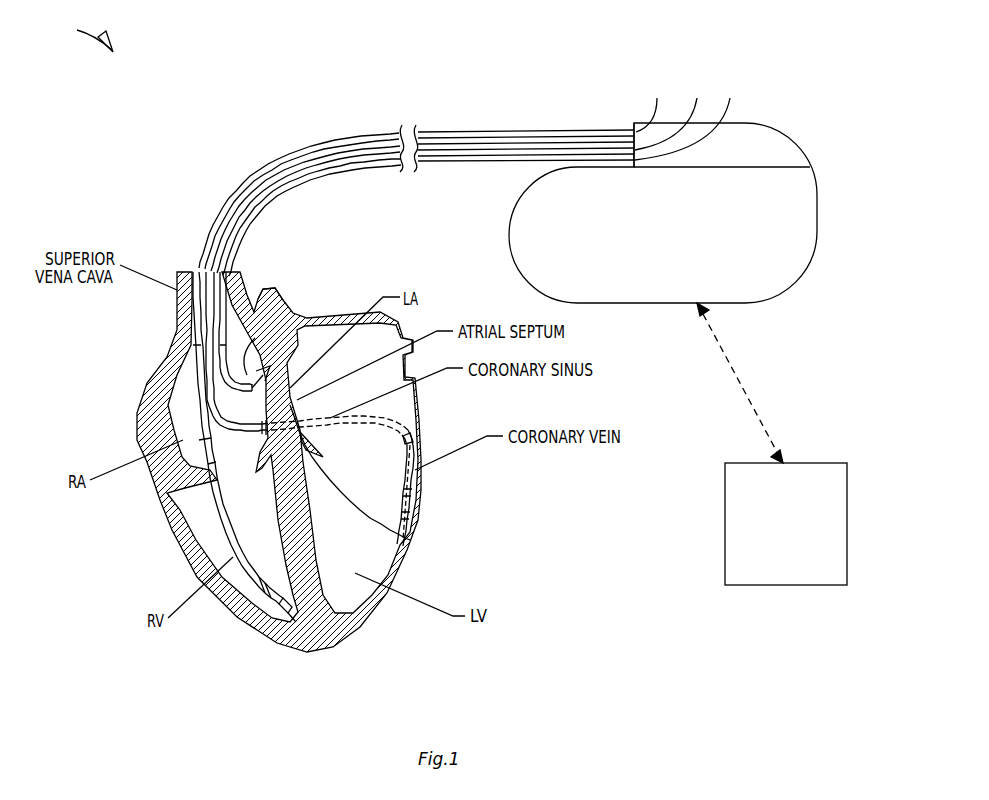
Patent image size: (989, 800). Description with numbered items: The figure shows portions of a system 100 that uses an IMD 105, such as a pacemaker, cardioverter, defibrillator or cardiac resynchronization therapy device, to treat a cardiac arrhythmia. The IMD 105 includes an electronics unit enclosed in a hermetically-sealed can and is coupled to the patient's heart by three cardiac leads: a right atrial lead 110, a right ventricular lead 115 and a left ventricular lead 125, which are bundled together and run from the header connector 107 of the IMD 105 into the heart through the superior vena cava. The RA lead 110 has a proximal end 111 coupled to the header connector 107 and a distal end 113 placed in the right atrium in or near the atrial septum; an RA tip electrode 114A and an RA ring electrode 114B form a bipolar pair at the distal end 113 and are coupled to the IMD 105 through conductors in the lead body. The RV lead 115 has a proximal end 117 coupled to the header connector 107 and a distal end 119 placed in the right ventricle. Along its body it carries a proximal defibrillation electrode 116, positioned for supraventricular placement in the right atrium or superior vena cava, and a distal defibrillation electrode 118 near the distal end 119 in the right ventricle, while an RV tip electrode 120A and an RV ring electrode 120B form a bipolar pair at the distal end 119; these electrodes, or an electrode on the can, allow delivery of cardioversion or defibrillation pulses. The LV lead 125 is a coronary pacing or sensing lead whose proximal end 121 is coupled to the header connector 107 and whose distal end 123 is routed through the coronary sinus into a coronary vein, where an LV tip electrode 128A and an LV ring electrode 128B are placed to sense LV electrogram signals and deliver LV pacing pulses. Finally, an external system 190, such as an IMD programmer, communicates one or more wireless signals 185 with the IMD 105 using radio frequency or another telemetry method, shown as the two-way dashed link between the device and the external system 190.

The system 100 is at (76, 36).
The IMD 105 is at (778, 302).
The header connector 107 is at (788, 133).
The right atrial (RA) lead 110 is at (440, 163).
The proximal end 111 is at (687, 119).
The distal end 113 is at (264, 371).
The RA tip electrode 114A is at (277, 365).
The RA ring electrode 114B is at (271, 289).
The right ventricular (RV) lead 115 is at (333, 144).
The proximal defibrillation electrode 116 is at (207, 397).
The proximal end 117 is at (652, 105).
The distal defibrillation electrode 118 is at (237, 532).
The distal end 119 is at (280, 615).
The RV tip electrode 120A is at (300, 627).
The RV ring electrode 120B is at (272, 597).
The proximal end 121 is at (669, 114).
The distal end 123 is at (412, 530).
The left ventricular (LV) lead 125 is at (283, 171).
The LV tip electrode 128A is at (418, 516).
The LV ring electrode 128B is at (418, 492).
The wireless signals 185 is at (742, 384).
The external system 190 is at (785, 585).